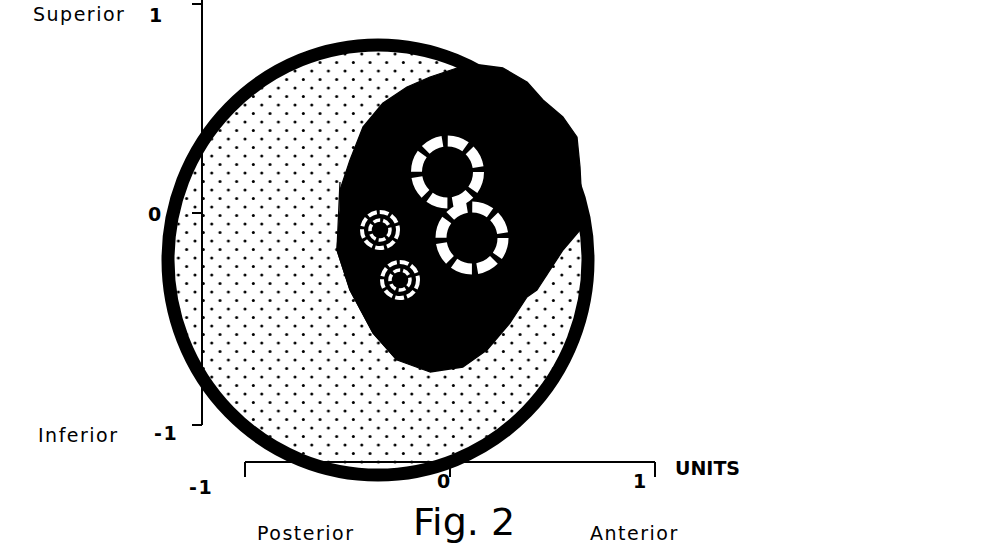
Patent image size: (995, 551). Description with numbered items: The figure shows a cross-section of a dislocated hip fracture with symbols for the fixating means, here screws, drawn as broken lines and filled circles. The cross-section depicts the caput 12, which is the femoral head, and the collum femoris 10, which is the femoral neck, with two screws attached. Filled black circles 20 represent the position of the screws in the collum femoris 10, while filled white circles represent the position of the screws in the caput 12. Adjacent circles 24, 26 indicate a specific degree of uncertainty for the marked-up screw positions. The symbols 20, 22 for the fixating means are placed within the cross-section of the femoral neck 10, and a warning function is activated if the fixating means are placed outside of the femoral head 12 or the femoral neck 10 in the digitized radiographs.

The collum femoris 10 is at (548, 100).
The caput 12 is at (352, 87).
The filled black circles 20 is at (584, 306).
The symbols for fixating means 22 is at (341, 266).
The adjacent circle 24 is at (340, 182).
The adjacent circle 26 is at (368, 124).